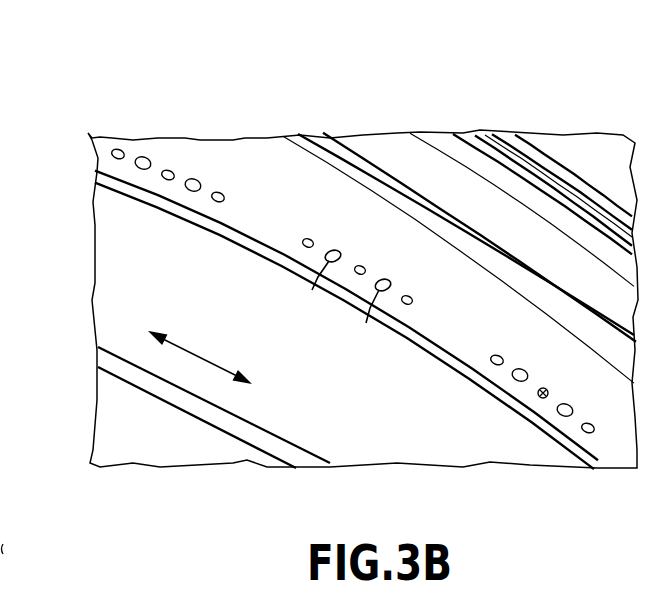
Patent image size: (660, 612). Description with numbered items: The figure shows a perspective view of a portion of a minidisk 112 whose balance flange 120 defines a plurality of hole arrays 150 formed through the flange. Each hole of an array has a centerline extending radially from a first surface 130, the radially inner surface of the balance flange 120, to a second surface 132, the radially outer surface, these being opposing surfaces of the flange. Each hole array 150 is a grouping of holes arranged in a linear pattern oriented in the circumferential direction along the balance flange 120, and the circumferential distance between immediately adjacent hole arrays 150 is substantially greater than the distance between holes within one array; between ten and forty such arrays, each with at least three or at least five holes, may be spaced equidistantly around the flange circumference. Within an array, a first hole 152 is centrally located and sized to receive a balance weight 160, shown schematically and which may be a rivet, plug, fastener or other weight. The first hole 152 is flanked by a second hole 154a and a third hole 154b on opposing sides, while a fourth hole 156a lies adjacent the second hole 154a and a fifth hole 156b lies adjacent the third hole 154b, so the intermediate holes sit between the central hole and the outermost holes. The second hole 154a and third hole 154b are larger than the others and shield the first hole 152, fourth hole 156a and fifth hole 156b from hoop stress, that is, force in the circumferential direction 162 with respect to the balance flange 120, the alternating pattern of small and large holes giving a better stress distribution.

The minidisk 112 is at (75, 104).
The balance flange 120 is at (218, 156).
The second surface 132 is at (290, 196).
The first surface 130 is at (240, 237).
The hole array 150 is at (218, 240).
The first hole 152 is at (362, 268).
The second hole 154a is at (309, 283).
The third hole 154b is at (358, 313).
The fourth hole 156a is at (311, 240).
The fifth hole 156b is at (413, 301).
The balance weight 160 is at (543, 388).
The circumferential direction 162 is at (218, 363).